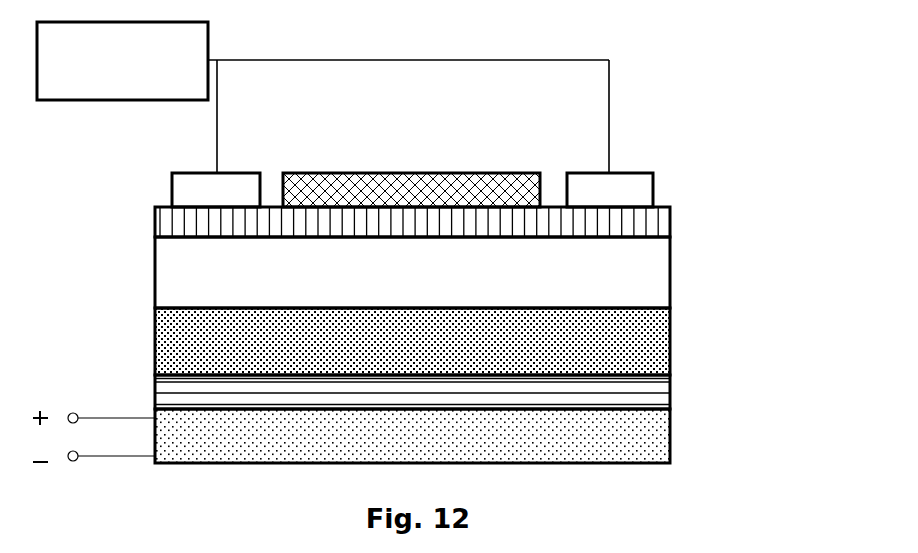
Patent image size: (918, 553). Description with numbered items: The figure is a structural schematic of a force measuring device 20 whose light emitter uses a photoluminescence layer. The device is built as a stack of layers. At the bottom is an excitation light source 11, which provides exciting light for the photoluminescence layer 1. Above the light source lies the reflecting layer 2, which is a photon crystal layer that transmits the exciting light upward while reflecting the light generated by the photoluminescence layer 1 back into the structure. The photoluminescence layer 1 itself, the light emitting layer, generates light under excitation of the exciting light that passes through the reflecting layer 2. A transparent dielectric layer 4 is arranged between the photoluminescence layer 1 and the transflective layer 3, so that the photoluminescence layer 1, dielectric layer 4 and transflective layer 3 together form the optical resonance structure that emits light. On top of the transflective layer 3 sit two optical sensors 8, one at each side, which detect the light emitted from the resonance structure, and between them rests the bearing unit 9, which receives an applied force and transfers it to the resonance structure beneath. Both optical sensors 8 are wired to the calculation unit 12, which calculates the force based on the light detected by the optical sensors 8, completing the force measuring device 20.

The force measuring device 20 is at (652, 118).
The calculation unit 12 is at (208, 34).
The bearing unit 9 is at (457, 173).
The optical sensor 8 is at (653, 191).
The transflective layer 3 is at (670, 223).
The transparent dielectric layer 4 is at (670, 272).
The photoluminescence layer 1 is at (670, 345).
The reflecting layer 2 is at (670, 392).
The excitation light source 11 is at (670, 435).